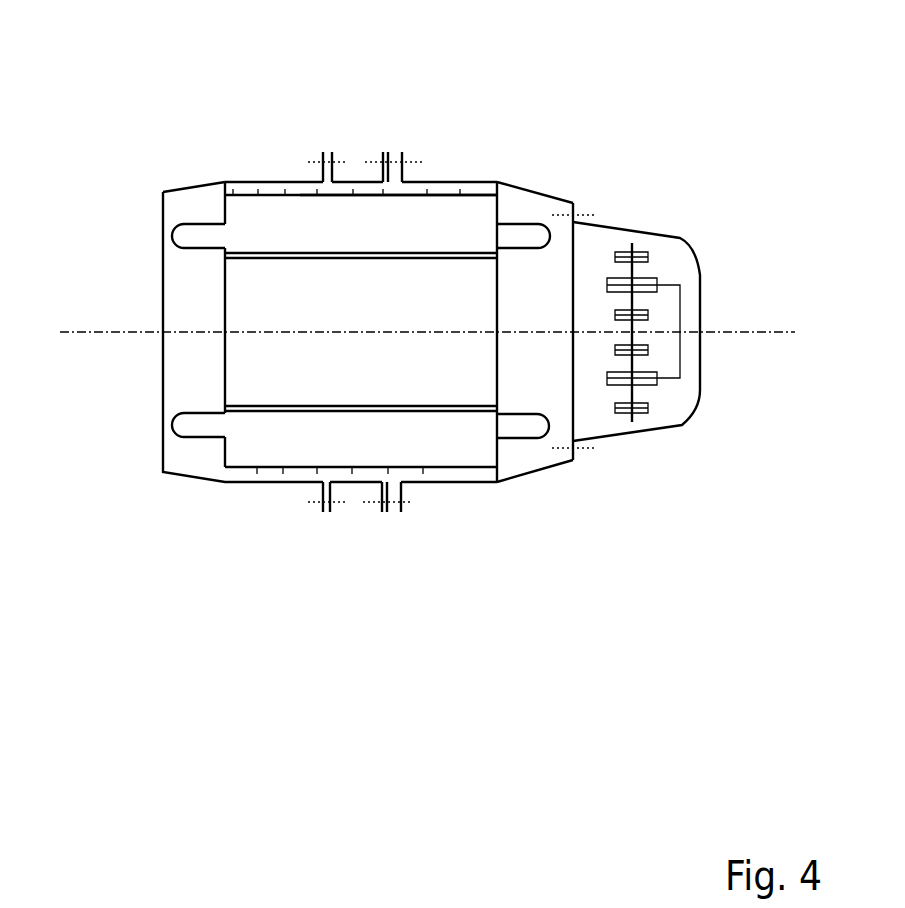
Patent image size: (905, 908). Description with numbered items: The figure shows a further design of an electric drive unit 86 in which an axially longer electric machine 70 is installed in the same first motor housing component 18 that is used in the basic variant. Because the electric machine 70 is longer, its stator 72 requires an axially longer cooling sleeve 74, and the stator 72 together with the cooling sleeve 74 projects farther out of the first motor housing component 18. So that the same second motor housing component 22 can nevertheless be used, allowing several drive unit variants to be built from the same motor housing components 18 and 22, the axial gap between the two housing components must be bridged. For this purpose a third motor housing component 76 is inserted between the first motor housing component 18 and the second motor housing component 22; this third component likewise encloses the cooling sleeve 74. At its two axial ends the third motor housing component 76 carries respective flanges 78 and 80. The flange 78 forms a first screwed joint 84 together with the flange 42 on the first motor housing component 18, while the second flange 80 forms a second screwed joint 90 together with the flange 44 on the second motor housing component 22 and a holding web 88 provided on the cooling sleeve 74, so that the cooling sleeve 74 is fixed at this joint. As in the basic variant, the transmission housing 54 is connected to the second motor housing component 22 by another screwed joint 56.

The first motor housing component 18 is at (162, 390).
The second motor housing component 22 is at (533, 473).
The flange 42 is at (347, 182).
The flange 44 is at (407, 173).
The transmission housing 54 is at (693, 412).
The screwed joint 56 is at (577, 209).
The electric machine 70 is at (214, 135).
The stator 72 is at (463, 220).
The cooling sleeve 74 is at (227, 182).
The third motor housing component 76 is at (358, 182).
The flange 78 is at (347, 194).
The second flange 80 is at (383, 165).
The first screwed joint 84 is at (321, 134).
The electric drive unit 86 is at (580, 126).
The holding web 88 is at (458, 182).
The second screwed joint 90 is at (400, 136).